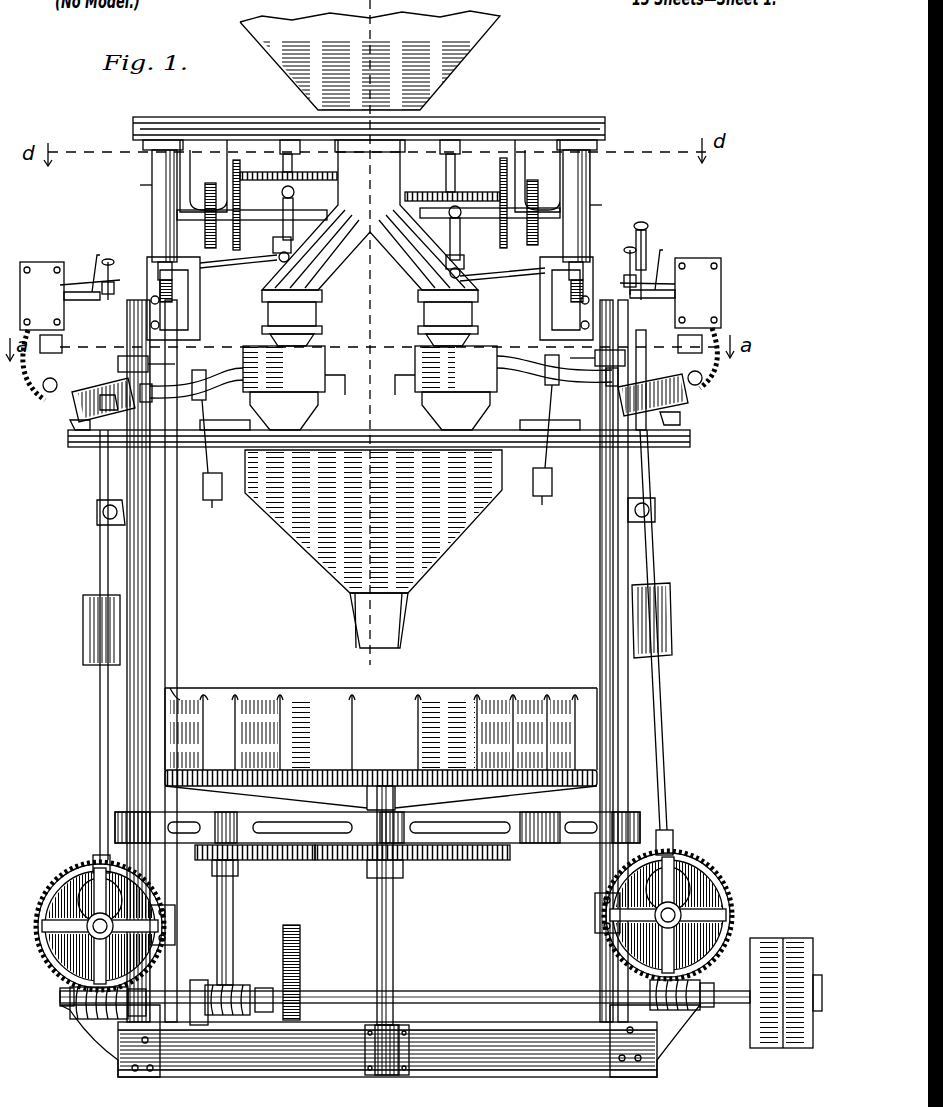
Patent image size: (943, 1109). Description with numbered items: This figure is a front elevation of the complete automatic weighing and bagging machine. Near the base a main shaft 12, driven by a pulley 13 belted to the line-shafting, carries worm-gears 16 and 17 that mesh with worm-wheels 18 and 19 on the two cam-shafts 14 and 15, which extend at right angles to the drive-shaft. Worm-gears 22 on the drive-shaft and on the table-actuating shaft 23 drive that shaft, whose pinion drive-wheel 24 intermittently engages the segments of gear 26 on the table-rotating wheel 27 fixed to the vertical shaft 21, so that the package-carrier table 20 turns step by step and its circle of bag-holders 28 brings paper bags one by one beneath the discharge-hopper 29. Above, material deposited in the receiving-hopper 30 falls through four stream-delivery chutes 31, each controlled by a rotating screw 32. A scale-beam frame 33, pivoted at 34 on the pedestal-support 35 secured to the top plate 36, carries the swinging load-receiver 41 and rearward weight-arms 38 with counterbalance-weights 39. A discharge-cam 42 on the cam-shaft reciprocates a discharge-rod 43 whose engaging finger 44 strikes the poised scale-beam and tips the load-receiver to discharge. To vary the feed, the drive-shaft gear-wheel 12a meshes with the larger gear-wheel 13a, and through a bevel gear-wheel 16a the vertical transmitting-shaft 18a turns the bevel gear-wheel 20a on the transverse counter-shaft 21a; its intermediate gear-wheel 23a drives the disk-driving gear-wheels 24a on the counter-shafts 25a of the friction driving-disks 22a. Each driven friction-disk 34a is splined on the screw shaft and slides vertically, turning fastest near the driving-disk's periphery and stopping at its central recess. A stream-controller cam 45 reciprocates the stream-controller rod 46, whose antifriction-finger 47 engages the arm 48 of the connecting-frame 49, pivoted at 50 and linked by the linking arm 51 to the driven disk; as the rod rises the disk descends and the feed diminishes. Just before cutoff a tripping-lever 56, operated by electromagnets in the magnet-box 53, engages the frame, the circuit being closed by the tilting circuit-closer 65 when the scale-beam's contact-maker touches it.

The main shaft 12 is at (478, 990).
The gear-wheel 12a is at (300, 995).
The pulley 13 is at (770, 948).
The intermediate larger gear-wheel 13a is at (300, 940).
The cam-shaft 14 is at (700, 905).
The cam-shaft 15 is at (108, 925).
The worm-gear 16 is at (683, 1012).
The bevel gear-wheel 16a is at (195, 980).
The worm-gear 17 is at (92, 1018).
The worm-wheel 18 is at (172, 912).
The vertical transmitting-shaft 18a is at (178, 588).
The worm-wheel 19 is at (72, 905).
The package-carrier table 20 is at (335, 798).
The bevel gear-wheel 20a is at (160, 228).
The vertical shaft 21 is at (393, 932).
The transverse counter-shaft 21a is at (420, 232).
The worm-gears 22 is at (240, 990).
The friction driving-disk 22a is at (240, 210).
The table-actuating shaft 23 is at (233, 916).
The intermediate gear-wheel 23a is at (536, 230).
The pinion drive-wheel 24 is at (236, 872).
The disk-driving gear-wheels 24a is at (598, 165).
The counter-shafts 25a is at (228, 160).
The segments of gear 26 is at (408, 862).
The table-rotating wheel 27 is at (455, 862).
The bag-holders 28 is at (390, 745).
The discharge-hopper 29 is at (373, 549).
The receiving-hopper 30 is at (370, 60).
The stream-delivery chutes 31 is at (370, 243).
The screws 32 is at (615, 348).
The scale-beam frame 33 is at (381, 372).
The pivot 34 is at (206, 395).
The driven friction-disk 34a is at (470, 172).
The pedestal-support 35 is at (205, 455).
The top plate 36 is at (428, 448).
The weight-arms 38 is at (380, 398).
The counterbalance-weights 39 is at (80, 420).
The load-receiver 41 is at (370, 388).
The discharge-cam 42 is at (694, 868).
The discharge-rod 43 is at (100, 805).
The engaging finger 44 is at (650, 420).
The stream-controller cam 45 is at (690, 888).
The stream-controller rod 46 is at (100, 540).
The antifriction-finger 47 is at (645, 228).
The arm 48 is at (130, 290).
The connecting-frame 49 is at (250, 262).
The pivot 50 is at (548, 290).
The linking arm 51 is at (296, 235).
The magnet-box 53 is at (370, 305).
The tripping-lever 56 is at (92, 270).
The tilting circuit-closer 65 is at (50, 392).